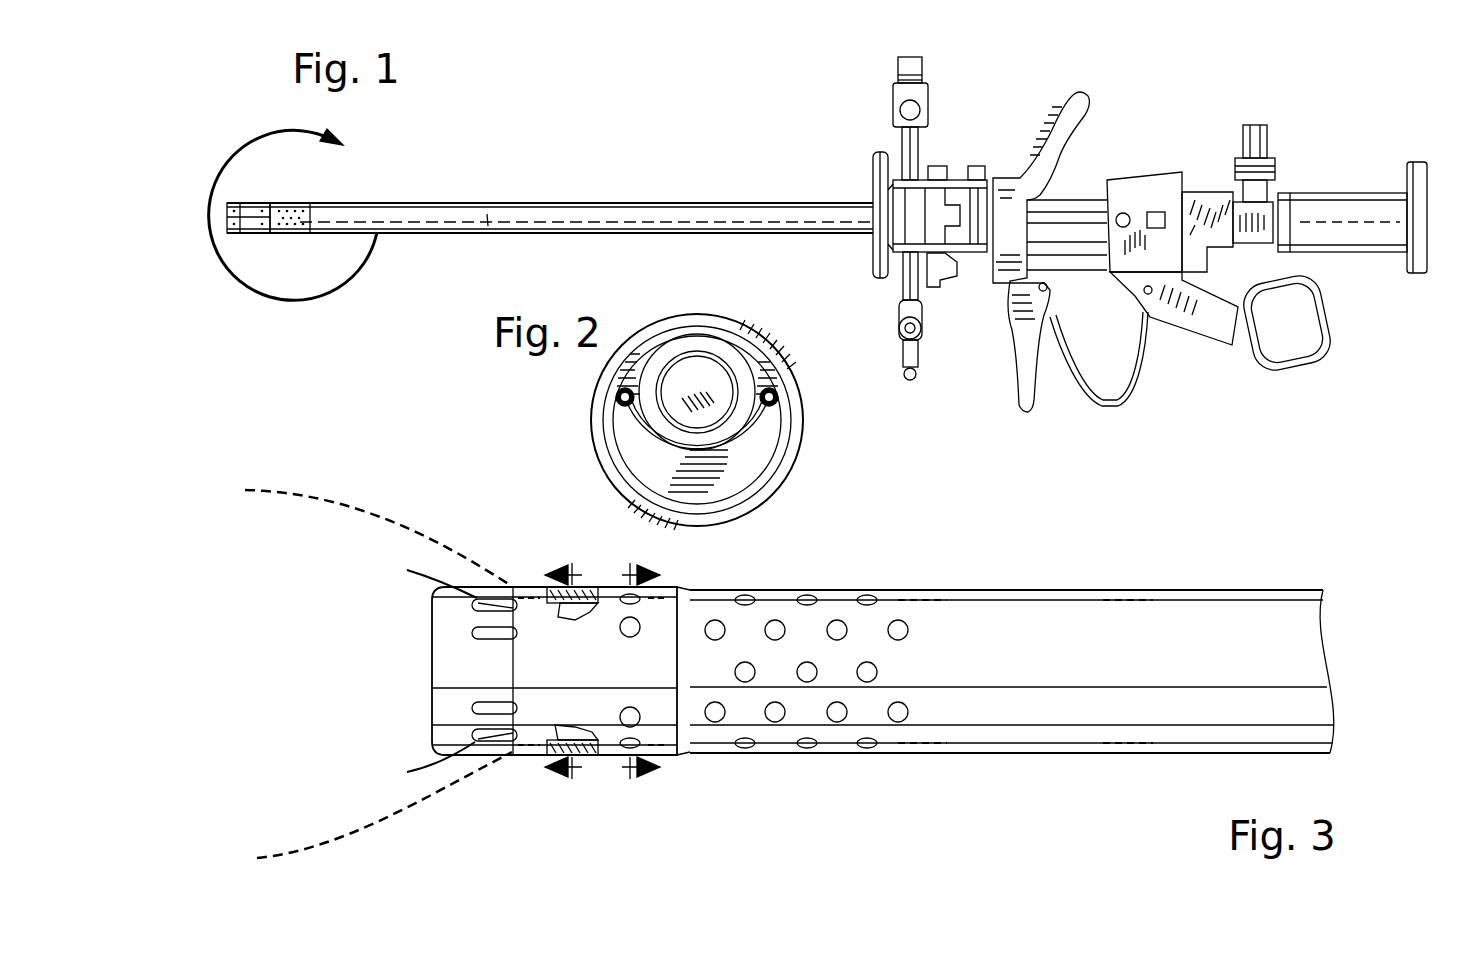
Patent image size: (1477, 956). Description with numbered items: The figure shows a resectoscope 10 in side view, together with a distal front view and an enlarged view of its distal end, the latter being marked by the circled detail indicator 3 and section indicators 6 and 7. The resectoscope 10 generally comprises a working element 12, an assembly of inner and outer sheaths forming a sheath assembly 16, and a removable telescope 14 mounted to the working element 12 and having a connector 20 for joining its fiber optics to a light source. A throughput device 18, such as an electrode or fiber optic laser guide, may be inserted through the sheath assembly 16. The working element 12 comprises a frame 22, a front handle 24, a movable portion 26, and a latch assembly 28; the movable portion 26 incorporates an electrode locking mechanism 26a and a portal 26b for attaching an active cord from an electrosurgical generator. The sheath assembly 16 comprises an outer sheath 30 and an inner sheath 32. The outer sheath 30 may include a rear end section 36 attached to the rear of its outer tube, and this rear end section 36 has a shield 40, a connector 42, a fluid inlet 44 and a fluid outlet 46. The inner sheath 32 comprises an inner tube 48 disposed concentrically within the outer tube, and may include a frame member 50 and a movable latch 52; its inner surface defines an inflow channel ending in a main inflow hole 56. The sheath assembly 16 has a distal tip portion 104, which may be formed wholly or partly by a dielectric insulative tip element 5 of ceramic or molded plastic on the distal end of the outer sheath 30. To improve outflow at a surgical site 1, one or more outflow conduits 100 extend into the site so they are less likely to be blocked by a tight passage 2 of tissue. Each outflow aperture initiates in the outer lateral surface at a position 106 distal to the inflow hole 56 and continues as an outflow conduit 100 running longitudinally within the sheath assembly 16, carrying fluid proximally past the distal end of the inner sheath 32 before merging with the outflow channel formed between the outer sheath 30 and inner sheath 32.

In FIG. 3, the surgical site 1 is at (308, 748).
In FIG. 3, the tight passage 2 is at (432, 707).
In FIG. 1, the detail view indicator 3 is at (293, 214).
In FIG. 3, the insulative tip element 5 is at (465, 760).
In FIG. 3, the section line 6 is at (650, 671).
In FIG. 3, the section line 7 is at (555, 671).
In FIG. 1, the resectoscope 10 is at (742, 125).
In FIG. 1, the working element 12 is at (1190, 191).
In FIG. 1, the telescope 14 is at (1352, 192).
In FIG. 2, the telescope 14 is at (682, 385).
In FIG. 1, the sheath assembly 16 is at (550, 211).
In FIG. 2, the sheath assembly 16 is at (721, 422).
In FIG. 3, the sheath assembly 16 is at (989, 575).
In FIG. 2, the throughput device 18 is at (784, 432).
In FIG. 1, the connector 20 is at (1270, 143).
In FIG. 1, the frame 22 is at (1062, 260).
In FIG. 1, the front handle 24 is at (1089, 112).
In FIG. 1, the movable portion 26 is at (1216, 345).
In FIG. 1, the electrode locking mechanism 26a is at (1126, 212).
In FIG. 1, the portal 26b is at (1160, 230).
In FIG. 1, the latch assembly 28 is at (978, 166).
In FIG. 1, the outer sheath 30 is at (750, 202).
In FIG. 1, the inner sheath 32 is at (489, 224).
In FIG. 2, the inner sheath 32 is at (762, 501).
In FIG. 1, the rear end section 36 is at (878, 152).
In FIG. 1, the shield 40 is at (876, 270).
In FIG. 1, the connector 42 is at (923, 180).
In FIG. 1, the fluid inlet 44 is at (926, 95).
In FIG. 1, the fluid outlet 46 is at (900, 284).
In FIG. 3, the inner tube 48 is at (582, 728).
In FIG. 1, the frame member 50 is at (956, 178).
In FIG. 1, the movable latch 52 is at (942, 285).
In FIG. 2, the main inflow hole 56 is at (638, 466).
In FIG. 3, the outflow conduit 100 is at (477, 634).
In FIG. 3, the distal tip portion 104 is at (430, 616).
In FIG. 3, the position 106 is at (470, 710).